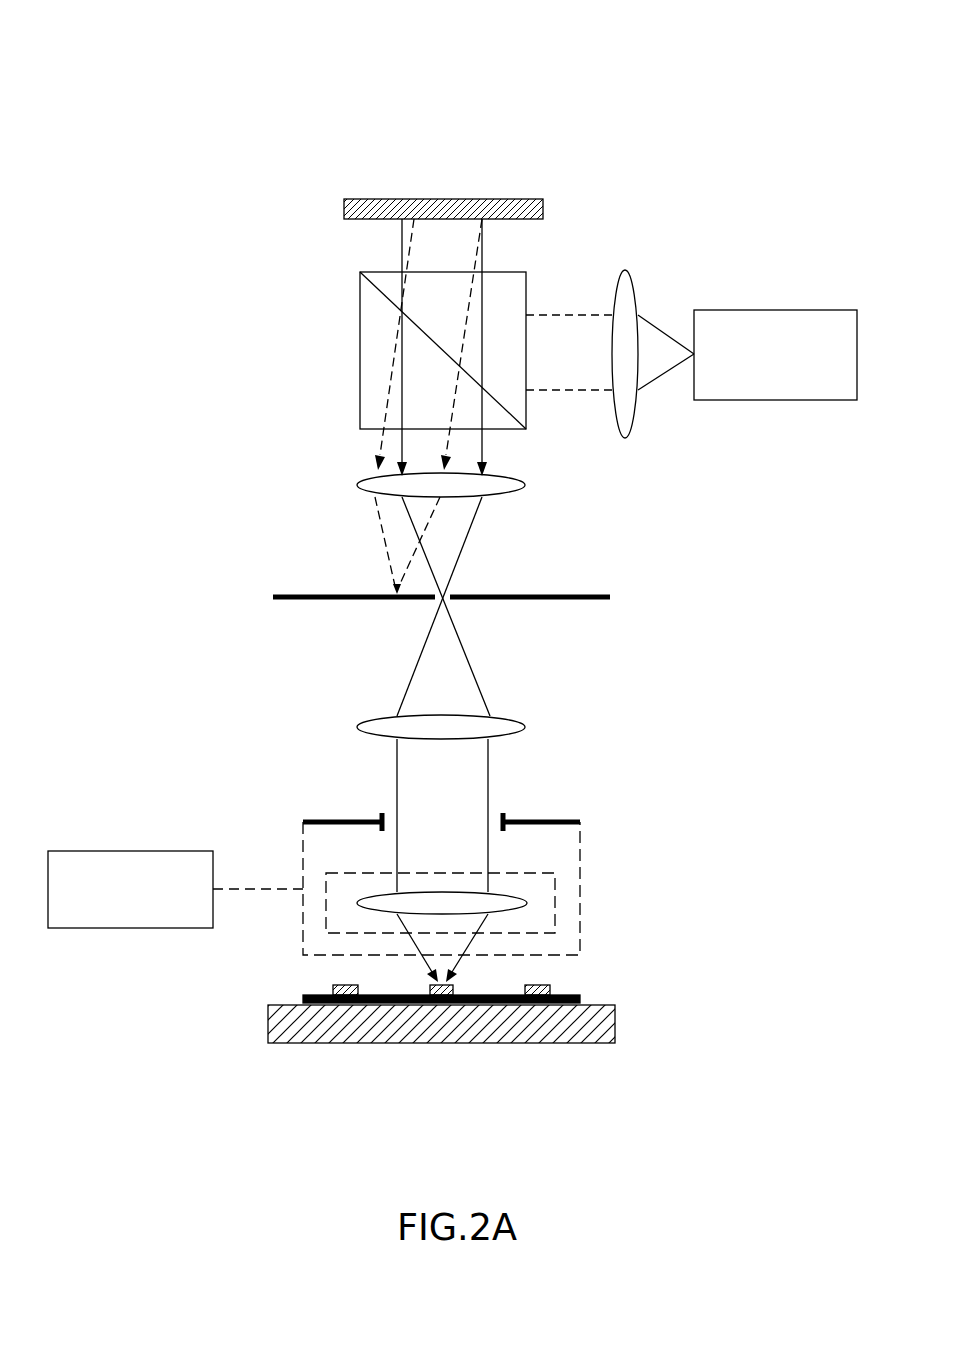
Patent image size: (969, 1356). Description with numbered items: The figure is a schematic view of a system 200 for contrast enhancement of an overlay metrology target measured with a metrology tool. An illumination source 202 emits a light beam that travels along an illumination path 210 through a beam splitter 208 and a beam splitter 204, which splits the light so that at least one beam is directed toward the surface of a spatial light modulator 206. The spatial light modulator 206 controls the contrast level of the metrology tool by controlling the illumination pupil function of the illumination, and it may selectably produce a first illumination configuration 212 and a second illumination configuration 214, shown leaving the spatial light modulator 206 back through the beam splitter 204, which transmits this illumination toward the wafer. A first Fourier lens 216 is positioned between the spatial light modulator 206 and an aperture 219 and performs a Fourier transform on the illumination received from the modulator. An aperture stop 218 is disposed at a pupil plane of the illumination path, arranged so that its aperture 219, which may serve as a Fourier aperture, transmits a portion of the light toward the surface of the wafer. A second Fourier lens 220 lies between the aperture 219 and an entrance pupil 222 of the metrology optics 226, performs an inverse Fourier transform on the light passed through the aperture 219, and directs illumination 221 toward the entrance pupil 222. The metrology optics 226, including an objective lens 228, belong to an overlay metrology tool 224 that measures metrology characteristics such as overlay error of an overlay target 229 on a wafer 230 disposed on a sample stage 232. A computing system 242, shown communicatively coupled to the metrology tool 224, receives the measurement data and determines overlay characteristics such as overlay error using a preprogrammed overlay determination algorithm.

The system 200 is at (176, 70).
The illumination source 202 is at (776, 310).
The beam splitter 204 is at (360, 290).
The spatial light modulator 206 is at (543, 206).
The beam splitter 208 is at (633, 428).
The illumination path 210 is at (549, 349).
The first illumination configuration 212 is at (470, 450).
The second illumination configuration 214 is at (392, 446).
The first Fourier lens 216 is at (505, 494).
The aperture stop 218 is at (590, 596).
The aperture 219 is at (459, 606).
The second Fourier lens 220 is at (505, 736).
The illumination 221 is at (438, 789).
The entrance pupil 222 is at (575, 822).
The overlay metrology tool 224 is at (580, 880).
The metrology optics 226 is at (340, 873).
The objective lens 228 is at (370, 905).
The overlay target 229 is at (455, 990).
The wafer 230 is at (582, 998).
The sample stage 232 is at (615, 1020).
The computing system 242 is at (130, 851).